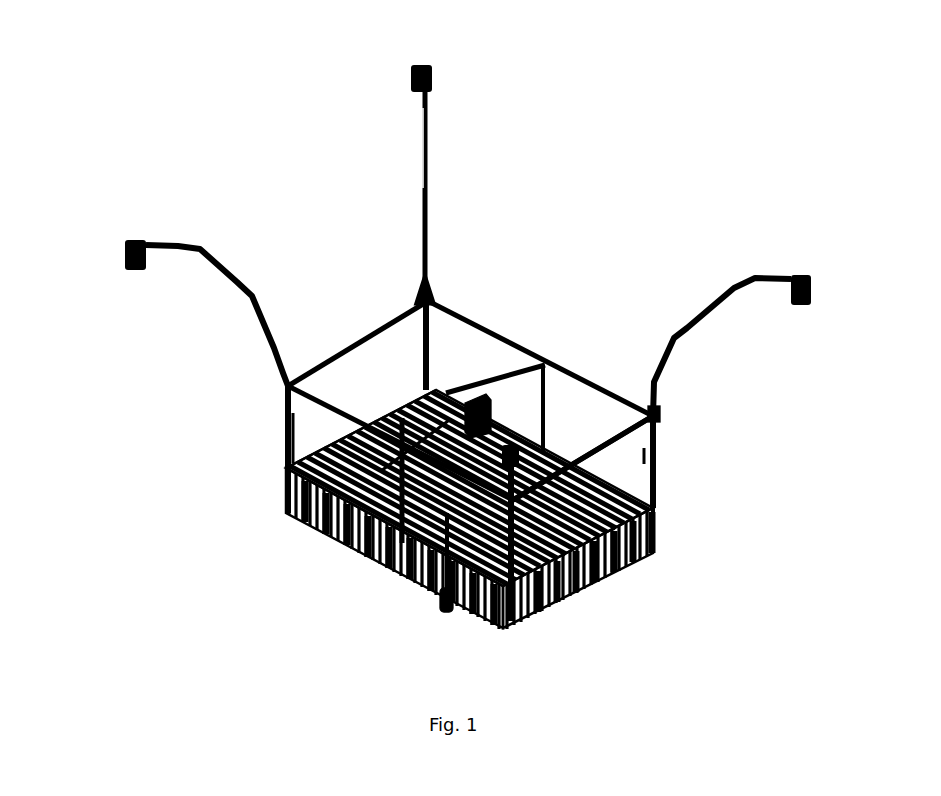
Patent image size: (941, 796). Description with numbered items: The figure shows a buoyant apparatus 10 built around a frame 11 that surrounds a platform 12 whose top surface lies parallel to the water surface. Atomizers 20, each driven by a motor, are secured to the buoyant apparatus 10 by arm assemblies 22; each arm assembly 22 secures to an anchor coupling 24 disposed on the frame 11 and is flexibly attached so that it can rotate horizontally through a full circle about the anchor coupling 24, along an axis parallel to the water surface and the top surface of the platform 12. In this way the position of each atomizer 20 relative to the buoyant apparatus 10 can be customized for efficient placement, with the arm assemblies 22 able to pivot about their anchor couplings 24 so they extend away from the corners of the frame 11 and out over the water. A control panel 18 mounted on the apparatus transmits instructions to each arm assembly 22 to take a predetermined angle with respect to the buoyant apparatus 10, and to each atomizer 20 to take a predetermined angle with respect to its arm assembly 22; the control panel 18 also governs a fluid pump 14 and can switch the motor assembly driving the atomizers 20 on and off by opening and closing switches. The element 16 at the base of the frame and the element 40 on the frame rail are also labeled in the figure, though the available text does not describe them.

The buoyant apparatus 10 is at (620, 566).
The frame 11 is at (277, 457).
The platform 12 is at (392, 392).
The fluid pump 14 is at (430, 593).
The post 16 is at (280, 497).
The control panel 18 is at (467, 385).
The atomizer 20 is at (428, 60).
The arm assembly 22 is at (690, 292).
The anchor coupling 24 is at (653, 405).
The rail 40 is at (613, 447).